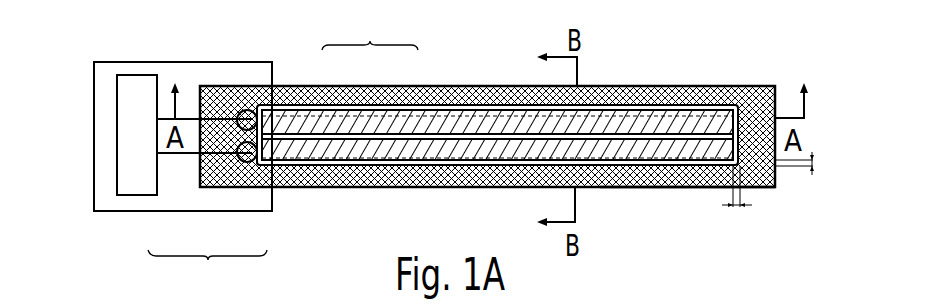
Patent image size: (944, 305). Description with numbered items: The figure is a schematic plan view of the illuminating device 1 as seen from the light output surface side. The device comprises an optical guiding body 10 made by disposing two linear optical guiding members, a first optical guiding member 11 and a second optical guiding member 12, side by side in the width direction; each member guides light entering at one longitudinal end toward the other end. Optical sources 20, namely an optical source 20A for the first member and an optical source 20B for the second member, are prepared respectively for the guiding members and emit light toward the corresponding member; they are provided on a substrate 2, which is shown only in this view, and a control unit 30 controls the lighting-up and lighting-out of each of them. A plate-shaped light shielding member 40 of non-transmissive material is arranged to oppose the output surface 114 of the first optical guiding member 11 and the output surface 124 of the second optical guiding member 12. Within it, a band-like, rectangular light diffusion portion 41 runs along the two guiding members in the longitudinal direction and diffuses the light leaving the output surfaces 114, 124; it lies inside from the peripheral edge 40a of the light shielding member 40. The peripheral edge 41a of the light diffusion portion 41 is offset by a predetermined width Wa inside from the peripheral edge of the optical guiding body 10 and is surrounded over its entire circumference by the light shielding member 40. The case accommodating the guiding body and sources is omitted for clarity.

The illuminating device 1 is at (772, 53).
The substrate 2 is at (94, 192).
The optical guiding body 10 is at (370, 25).
The first optical guiding member 11 is at (346, 122).
The second optical guiding member 12 is at (388, 150).
The output surface 114 is at (508, 100).
The output surface 124 is at (429, 155).
The optical sources 20 is at (207, 274).
The optical source 20A is at (238, 127).
The optical source 20B is at (243, 162).
The control unit 30 is at (138, 63).
The light shielding member 40 is at (716, 86).
The peripheral edge 40a is at (690, 188).
The light diffusion portion 41 is at (630, 105).
The peripheral edge 41a is at (638, 166).
The predetermined width Wa is at (788, 198).